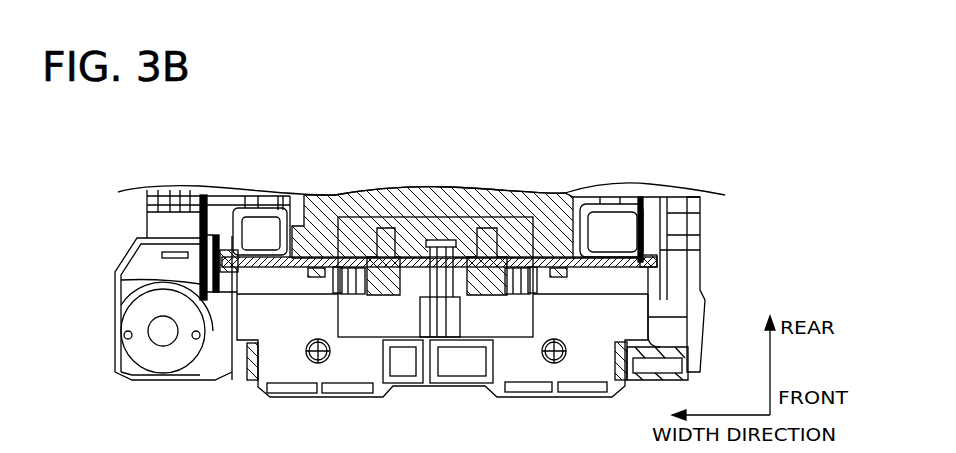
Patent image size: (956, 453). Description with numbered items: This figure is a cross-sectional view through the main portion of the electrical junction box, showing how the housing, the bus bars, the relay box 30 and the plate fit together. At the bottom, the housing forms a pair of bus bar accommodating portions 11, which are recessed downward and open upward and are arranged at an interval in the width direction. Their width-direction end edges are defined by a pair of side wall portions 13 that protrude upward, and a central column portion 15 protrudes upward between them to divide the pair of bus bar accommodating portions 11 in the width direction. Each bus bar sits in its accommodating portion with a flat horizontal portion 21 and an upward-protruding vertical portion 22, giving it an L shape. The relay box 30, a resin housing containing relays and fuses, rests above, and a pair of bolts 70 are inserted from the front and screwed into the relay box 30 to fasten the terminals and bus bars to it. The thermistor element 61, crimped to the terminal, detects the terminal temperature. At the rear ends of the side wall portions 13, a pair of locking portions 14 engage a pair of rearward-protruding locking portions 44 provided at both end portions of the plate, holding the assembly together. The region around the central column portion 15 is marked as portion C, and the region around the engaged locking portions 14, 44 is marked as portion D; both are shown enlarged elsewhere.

The bus bar accommodating portion 11 is at (258, 368).
The side wall portion 13 is at (200, 273).
The locking portion 14 is at (228, 250).
The central column portion 15 is at (437, 303).
The horizontal portion 21 is at (347, 370).
The vertical portion 22 is at (306, 258).
The relay box 30 is at (484, 192).
The locking portion 44 is at (228, 250).
The thermistor element 61 is at (318, 272).
The bolt 70 is at (389, 298).
The portion C is at (430, 213).
The portion D is at (647, 233).